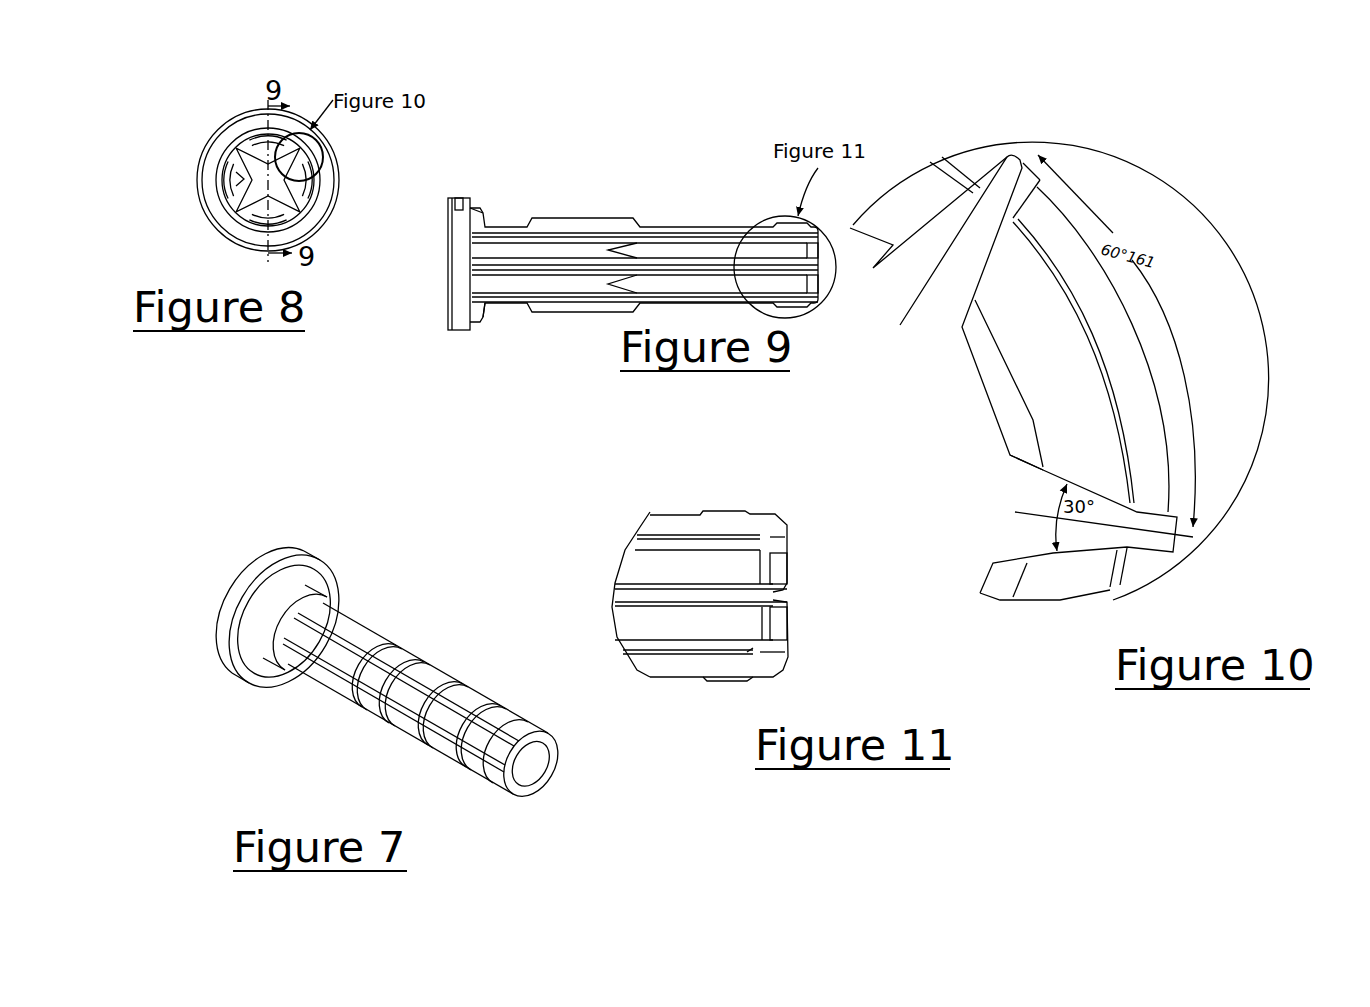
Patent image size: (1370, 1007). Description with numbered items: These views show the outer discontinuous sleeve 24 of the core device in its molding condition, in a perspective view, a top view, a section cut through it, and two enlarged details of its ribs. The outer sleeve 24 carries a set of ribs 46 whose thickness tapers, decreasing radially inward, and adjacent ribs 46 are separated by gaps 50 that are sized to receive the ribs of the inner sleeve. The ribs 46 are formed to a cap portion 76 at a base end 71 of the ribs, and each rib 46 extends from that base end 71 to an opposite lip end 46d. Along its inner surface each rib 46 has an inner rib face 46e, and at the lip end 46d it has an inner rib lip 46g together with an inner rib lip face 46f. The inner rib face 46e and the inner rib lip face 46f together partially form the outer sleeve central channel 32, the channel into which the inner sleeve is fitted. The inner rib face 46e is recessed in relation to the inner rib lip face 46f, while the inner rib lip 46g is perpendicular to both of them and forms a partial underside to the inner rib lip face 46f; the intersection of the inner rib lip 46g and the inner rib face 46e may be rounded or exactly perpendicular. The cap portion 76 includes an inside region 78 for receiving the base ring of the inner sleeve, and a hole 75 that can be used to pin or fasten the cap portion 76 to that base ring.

In FIG. 9, the outer discontinuous sleeve 24 is at (644, 242).
In FIG. 11, the outer discontinuous sleeve 24 is at (712, 498).
In FIG. 7, the outer discontinuous sleeve 24 is at (400, 625).
In FIG. 8, the outer sleeve central channel 32 is at (257, 173).
In FIG. 8, the ribs 46 is at (240, 160).
In FIG. 9, the ribs 46 is at (657, 228).
In FIG. 10, the ribs 46 is at (1107, 458).
In FIG. 11, the ribs 46 is at (660, 522).
In FIG. 7, the ribs 46 is at (415, 660).
In FIG. 8, the gaps 50 is at (228, 183).
In FIG. 10, the gaps 50 is at (1028, 188).
In FIG. 9, the base end 71 is at (493, 319).
In FIG. 9, the hole 75 is at (462, 198).
In FIG. 9, the cap portion 76 is at (483, 203).
In FIG. 7, the cap portion 76 is at (227, 633).
In FIG. 9, the inside region 78 is at (448, 327).
In FIG. 11, the lip end 46d is at (790, 567).
In FIG. 11, the inner rib face 46e is at (715, 567).
In FIG. 11, the inner rib lip face 46f is at (778, 570).
In FIG. 11, the inner rib lip 46g is at (753, 650).